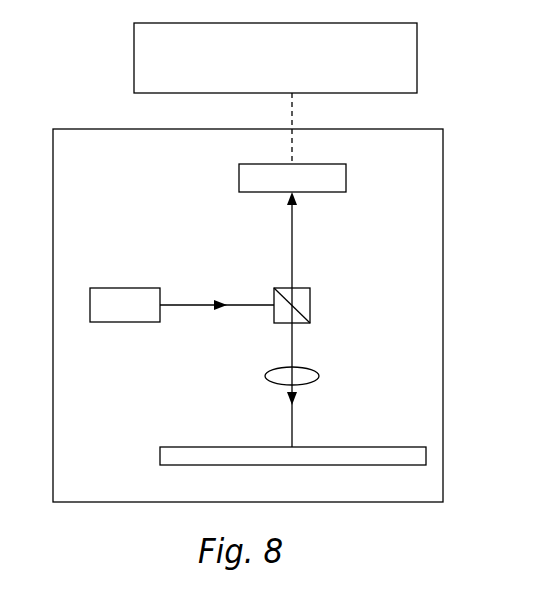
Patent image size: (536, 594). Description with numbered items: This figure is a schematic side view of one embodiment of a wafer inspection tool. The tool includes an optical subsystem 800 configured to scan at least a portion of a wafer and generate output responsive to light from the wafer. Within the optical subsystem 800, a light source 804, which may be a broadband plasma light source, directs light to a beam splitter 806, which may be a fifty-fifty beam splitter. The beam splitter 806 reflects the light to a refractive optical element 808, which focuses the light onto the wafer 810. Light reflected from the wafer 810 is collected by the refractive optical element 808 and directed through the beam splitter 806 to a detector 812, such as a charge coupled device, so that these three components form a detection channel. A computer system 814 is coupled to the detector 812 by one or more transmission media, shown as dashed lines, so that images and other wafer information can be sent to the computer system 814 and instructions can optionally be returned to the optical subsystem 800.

The optical subsystem 800 is at (165, 129).
The light source 804 is at (142, 288).
The beam splitter 806 is at (310, 303).
The refractive optical element 808 is at (316, 372).
The wafer 810 is at (212, 446).
The detector 812 is at (240, 181).
The computer system 814 is at (390, 68).